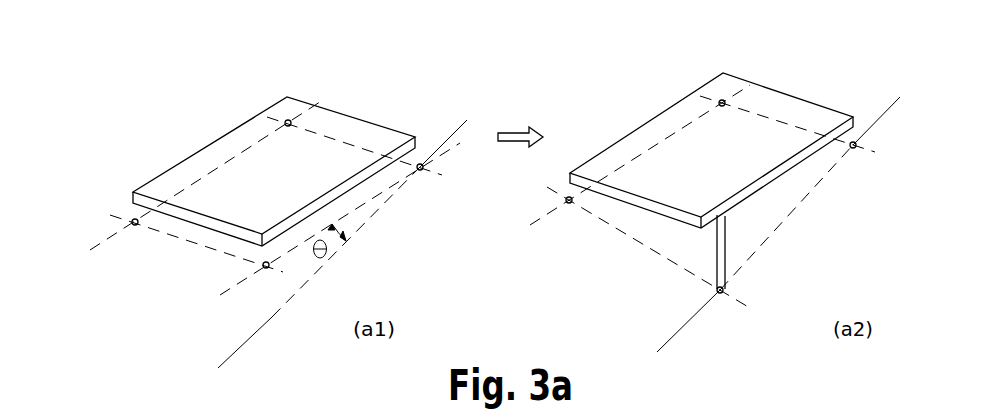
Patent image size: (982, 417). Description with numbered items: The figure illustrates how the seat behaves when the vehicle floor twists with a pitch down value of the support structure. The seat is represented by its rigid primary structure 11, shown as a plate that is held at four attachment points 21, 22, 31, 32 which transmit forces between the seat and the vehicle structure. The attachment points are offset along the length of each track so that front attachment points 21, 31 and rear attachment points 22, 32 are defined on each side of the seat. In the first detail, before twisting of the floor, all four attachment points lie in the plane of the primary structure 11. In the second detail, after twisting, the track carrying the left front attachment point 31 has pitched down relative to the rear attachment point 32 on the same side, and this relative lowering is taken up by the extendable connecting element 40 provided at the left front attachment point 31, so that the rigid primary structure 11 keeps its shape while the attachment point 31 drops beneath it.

The primary structure 11 is at (207, 146).
The front attachment point 21 is at (137, 226).
The rear attachment point 22 is at (288, 120).
The left front attachment point 31 is at (266, 268).
The rear attachment point 32 is at (420, 170).
The extendable connecting element 40 is at (742, 246).